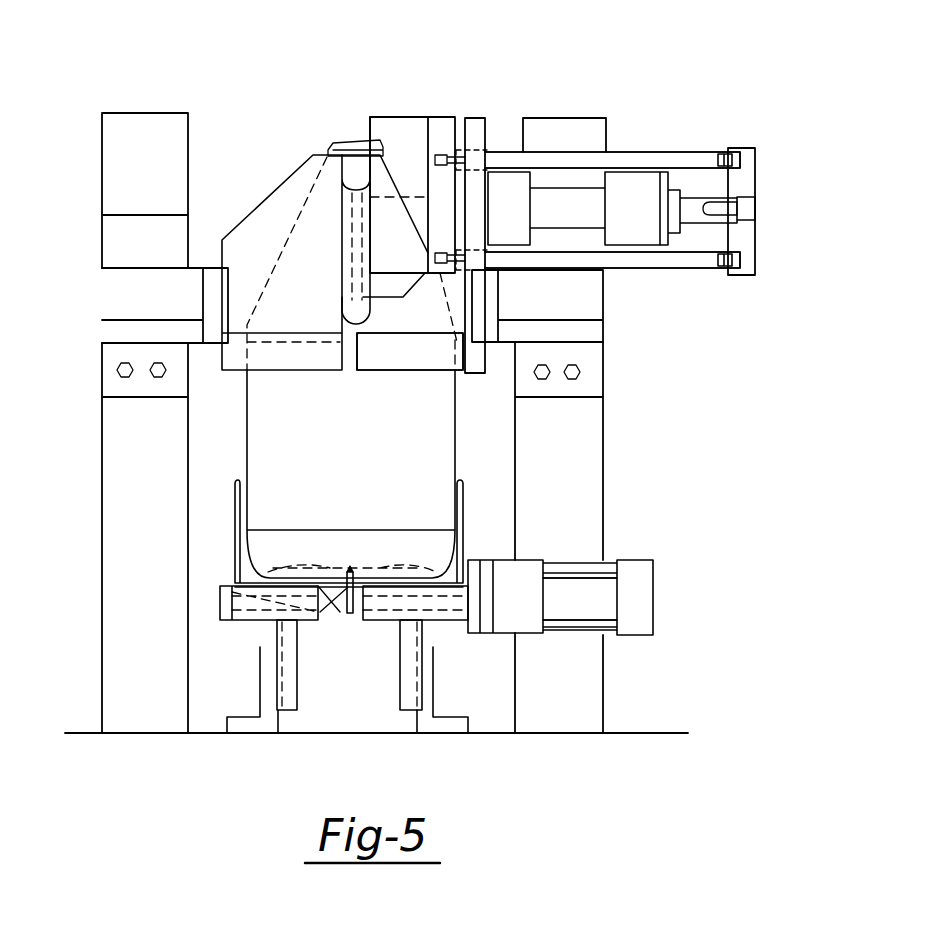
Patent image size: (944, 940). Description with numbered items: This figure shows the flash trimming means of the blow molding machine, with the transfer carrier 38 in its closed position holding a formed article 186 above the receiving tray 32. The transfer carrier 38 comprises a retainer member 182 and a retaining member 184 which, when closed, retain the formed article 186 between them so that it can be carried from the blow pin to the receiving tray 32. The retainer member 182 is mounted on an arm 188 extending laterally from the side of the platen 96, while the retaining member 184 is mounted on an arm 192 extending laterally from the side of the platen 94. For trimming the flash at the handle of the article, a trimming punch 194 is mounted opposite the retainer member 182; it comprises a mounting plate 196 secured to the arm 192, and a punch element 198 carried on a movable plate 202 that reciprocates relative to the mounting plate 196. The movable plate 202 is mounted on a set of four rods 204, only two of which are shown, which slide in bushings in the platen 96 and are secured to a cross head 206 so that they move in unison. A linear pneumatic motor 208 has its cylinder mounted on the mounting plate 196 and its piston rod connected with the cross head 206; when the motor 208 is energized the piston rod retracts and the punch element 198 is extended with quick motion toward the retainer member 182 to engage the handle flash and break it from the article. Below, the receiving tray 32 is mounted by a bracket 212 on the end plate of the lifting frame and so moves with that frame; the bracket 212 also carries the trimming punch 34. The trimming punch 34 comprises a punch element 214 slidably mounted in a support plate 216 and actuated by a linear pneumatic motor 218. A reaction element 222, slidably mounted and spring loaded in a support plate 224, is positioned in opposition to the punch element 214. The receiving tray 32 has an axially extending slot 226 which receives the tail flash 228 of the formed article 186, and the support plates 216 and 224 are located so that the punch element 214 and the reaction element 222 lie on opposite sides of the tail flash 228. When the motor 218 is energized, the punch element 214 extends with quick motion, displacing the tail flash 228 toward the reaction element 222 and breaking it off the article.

The receiving tray 32 is at (463, 512).
The trimming punch 34 is at (490, 645).
The transfer carrier 38 is at (322, 118).
The first platen 94 is at (605, 442).
The second platen 96 is at (102, 160).
The retainer member 182 is at (257, 206).
The retaining member 184 is at (383, 366).
The formed article 186 is at (247, 438).
The arm 188 is at (100, 338).
The arm 192 is at (603, 330).
The trimming punch 194 is at (617, 150).
The mounting plate 196 is at (487, 132).
The punch element 198 is at (400, 165).
The movable plate 202 is at (448, 116).
The rods 204 is at (675, 155).
The cross head 206 is at (755, 185).
The linear pneumatic motor 208 is at (630, 253).
The bracket 212 is at (282, 730).
The punch element 214 is at (383, 603).
The support plate 216 is at (443, 621).
The linear pneumatic motor 218 is at (573, 635).
The reaction element 222 is at (345, 592).
The support plate 224 is at (245, 622).
The slot 226 is at (349, 567).
The tail flash 228 is at (347, 595).